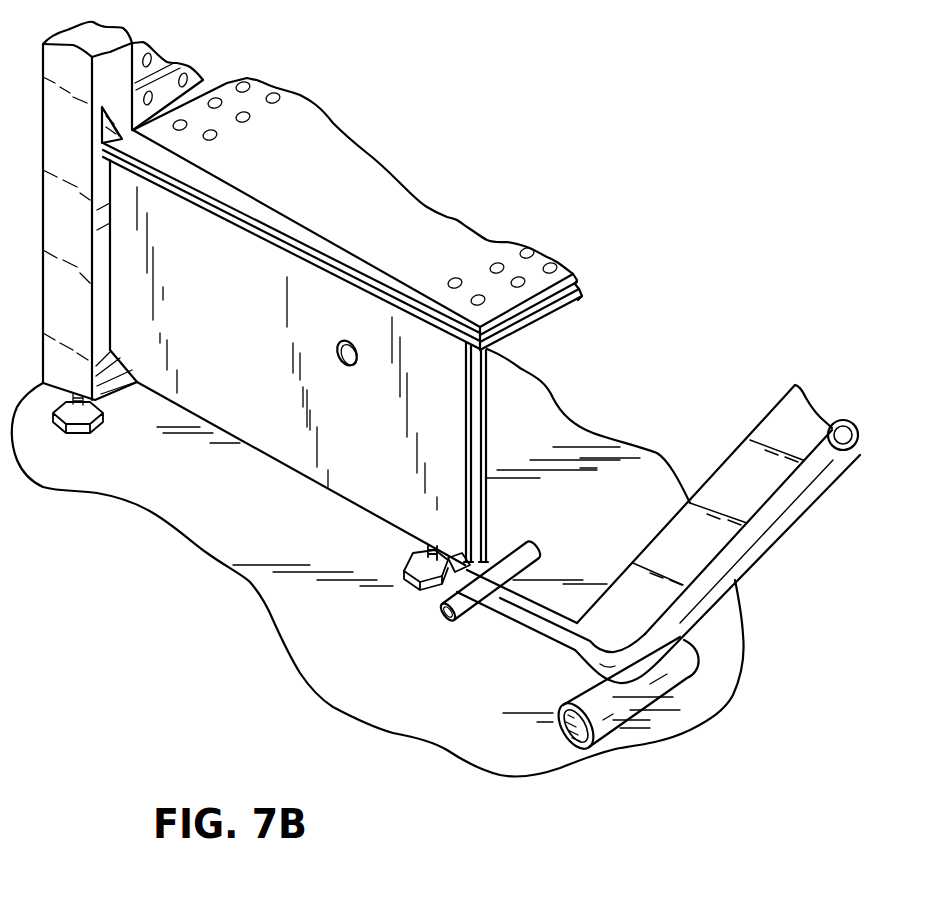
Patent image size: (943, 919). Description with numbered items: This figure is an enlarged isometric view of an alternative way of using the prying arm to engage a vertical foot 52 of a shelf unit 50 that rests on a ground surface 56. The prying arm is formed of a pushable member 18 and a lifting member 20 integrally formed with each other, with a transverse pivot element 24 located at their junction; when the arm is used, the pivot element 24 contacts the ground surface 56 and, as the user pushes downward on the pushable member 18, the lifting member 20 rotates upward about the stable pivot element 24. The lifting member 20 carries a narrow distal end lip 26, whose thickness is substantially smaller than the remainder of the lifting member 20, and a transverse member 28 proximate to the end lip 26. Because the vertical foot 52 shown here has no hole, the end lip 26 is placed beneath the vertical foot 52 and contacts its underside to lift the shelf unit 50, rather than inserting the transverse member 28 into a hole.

The pushable member 18 is at (826, 492).
The lifting member 20 is at (538, 655).
The pivot element 24 is at (593, 692).
The end lip 26 is at (432, 598).
The transverse member 28 is at (533, 548).
The shelf unit 50 is at (439, 227).
The vertical foot 52 is at (271, 383).
The ground surface 56 is at (276, 535).